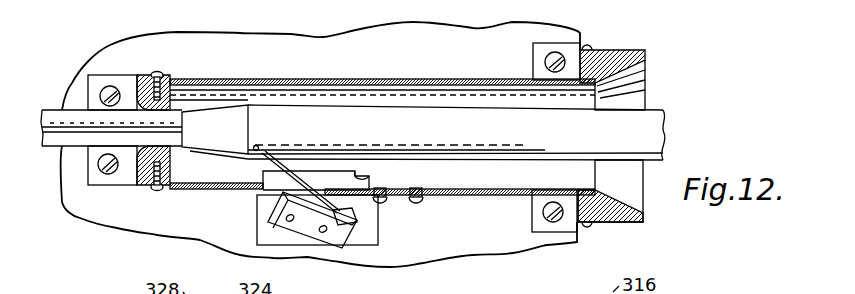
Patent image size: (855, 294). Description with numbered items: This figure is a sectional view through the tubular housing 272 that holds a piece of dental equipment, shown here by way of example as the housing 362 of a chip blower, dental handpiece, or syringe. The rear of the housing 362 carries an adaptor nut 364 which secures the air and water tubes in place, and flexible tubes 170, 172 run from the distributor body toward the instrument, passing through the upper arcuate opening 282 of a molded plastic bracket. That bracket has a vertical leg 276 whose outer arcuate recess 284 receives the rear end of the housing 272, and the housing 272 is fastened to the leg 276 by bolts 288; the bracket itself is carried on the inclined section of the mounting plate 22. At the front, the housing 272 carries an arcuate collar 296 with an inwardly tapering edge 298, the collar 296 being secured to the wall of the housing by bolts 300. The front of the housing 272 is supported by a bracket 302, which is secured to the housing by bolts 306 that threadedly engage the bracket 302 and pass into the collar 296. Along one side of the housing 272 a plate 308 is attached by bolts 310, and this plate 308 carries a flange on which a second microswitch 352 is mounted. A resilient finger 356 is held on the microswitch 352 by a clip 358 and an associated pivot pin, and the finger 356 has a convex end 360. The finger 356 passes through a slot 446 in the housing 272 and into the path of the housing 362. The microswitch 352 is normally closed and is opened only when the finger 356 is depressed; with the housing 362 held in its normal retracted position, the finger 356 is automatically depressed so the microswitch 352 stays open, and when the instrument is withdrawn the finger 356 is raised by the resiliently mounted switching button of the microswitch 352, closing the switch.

The mounting plate 22 is at (415, 20).
The flexible tube 170 is at (52, 108).
The flexible tube 172 is at (54, 146).
The vertical leg 276 is at (142, 76).
The outer arcuate recess 284 is at (148, 190).
The bolt 288 is at (163, 72).
The housing 272 is at (394, 76).
The adaptor nut 364 is at (230, 112).
The upper arcuate opening 282 is at (168, 149).
The housing 362 is at (650, 135).
The bracket 302 is at (533, 68).
The arcuate collar 296 is at (618, 52).
The inwardly tapering edge 298 is at (645, 72).
The bolt 300 is at (585, 48).
The bolt 306 is at (533, 230).
The bolt 310 is at (422, 200).
The plate 308 is at (398, 204).
The slot 446 is at (370, 176).
The convex end 360 is at (257, 145).
The resilient finger 356 is at (290, 168).
The clip 358 is at (356, 222).
The second microswitch 352 is at (338, 240).